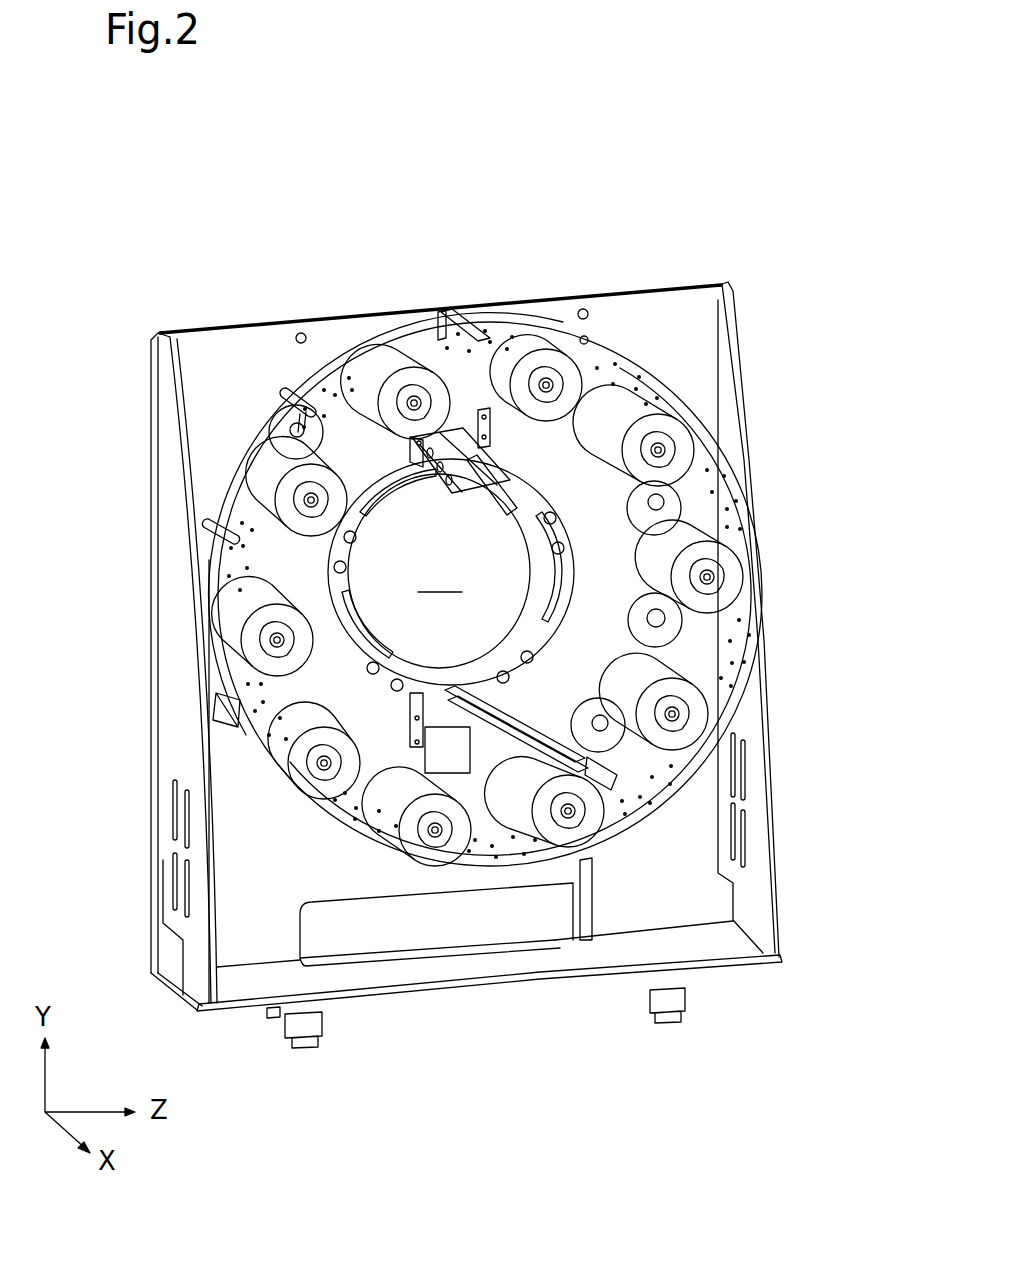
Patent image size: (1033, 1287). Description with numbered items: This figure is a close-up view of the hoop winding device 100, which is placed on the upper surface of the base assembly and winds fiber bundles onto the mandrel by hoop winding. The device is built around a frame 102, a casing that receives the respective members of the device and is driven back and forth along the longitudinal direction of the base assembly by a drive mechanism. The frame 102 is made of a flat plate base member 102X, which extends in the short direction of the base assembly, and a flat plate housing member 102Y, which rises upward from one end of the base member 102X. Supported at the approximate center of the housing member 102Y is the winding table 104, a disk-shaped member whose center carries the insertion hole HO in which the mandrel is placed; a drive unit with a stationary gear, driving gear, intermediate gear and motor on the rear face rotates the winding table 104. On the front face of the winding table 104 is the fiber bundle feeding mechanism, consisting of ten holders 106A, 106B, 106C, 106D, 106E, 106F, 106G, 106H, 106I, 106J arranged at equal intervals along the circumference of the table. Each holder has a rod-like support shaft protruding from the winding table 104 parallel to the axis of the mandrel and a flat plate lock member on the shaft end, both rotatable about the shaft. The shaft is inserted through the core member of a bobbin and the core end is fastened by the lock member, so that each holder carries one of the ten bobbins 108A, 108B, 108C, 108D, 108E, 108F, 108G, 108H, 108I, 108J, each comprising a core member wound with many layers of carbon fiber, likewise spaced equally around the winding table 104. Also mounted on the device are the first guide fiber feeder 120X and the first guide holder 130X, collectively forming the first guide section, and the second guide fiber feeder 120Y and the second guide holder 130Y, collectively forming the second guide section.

The hoop winding device 100 is at (800, 244).
The frame 102 is at (808, 957).
The base member 102X is at (660, 947).
The housing member 102Y is at (703, 892).
The winding table 104 is at (597, 517).
The holder 106A is at (304, 502).
The holder 106B is at (408, 396).
The holder 106C is at (550, 375).
The holder 106D is at (668, 448).
The holder 106E is at (717, 579).
The holder 106F is at (682, 712).
The holder 106G is at (578, 816).
The holder 106H is at (441, 840).
The holder 106I is at (314, 772).
The holder 106J is at (268, 640).
The bobbin 108A is at (262, 466).
The bobbin 108B is at (390, 387).
The bobbin 108C is at (540, 368).
The bobbin 108D is at (670, 428).
The bobbin 108E is at (723, 561).
The bobbin 108F is at (692, 701).
The bobbin 108G is at (560, 836).
The bobbin 108H is at (423, 853).
The bobbin 108I is at (298, 762).
The bobbin 108J is at (222, 612).
The first guide fiber feeder 120X is at (507, 470).
The second guide fiber feeder 120Y is at (612, 773).
The first guide holder 130X is at (448, 428).
The second guide holder 130Y is at (408, 710).